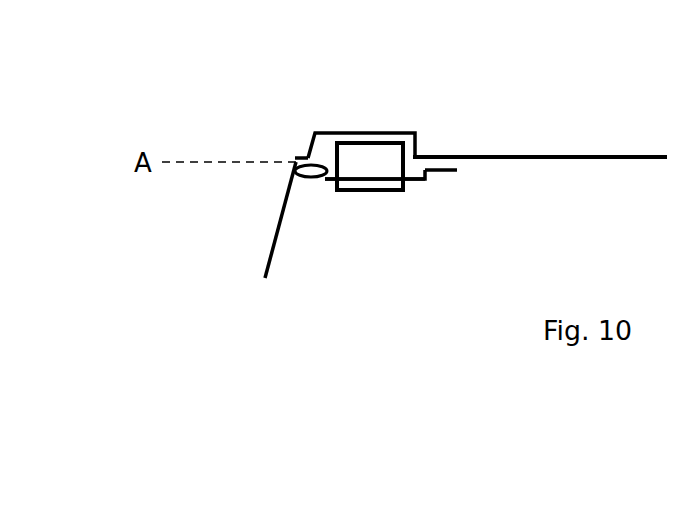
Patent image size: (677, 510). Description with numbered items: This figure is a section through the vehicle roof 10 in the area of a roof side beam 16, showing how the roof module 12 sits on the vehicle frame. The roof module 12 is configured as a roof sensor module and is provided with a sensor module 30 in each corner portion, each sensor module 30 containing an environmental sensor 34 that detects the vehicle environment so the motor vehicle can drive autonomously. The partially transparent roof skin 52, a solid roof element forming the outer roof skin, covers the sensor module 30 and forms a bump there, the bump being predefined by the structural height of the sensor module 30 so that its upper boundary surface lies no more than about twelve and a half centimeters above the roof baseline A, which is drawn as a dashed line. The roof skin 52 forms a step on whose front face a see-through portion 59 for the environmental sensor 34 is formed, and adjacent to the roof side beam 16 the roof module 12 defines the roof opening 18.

The vehicle roof 10 is at (630, 155).
The roof module 12 is at (502, 155).
The roof side beam 16 is at (312, 177).
The roof opening 18 is at (413, 181).
The sensor module 30 is at (390, 165).
The environmental sensor 34 is at (370, 166).
The roof skin 52 is at (328, 132).
The see-through portion 59 is at (310, 135).